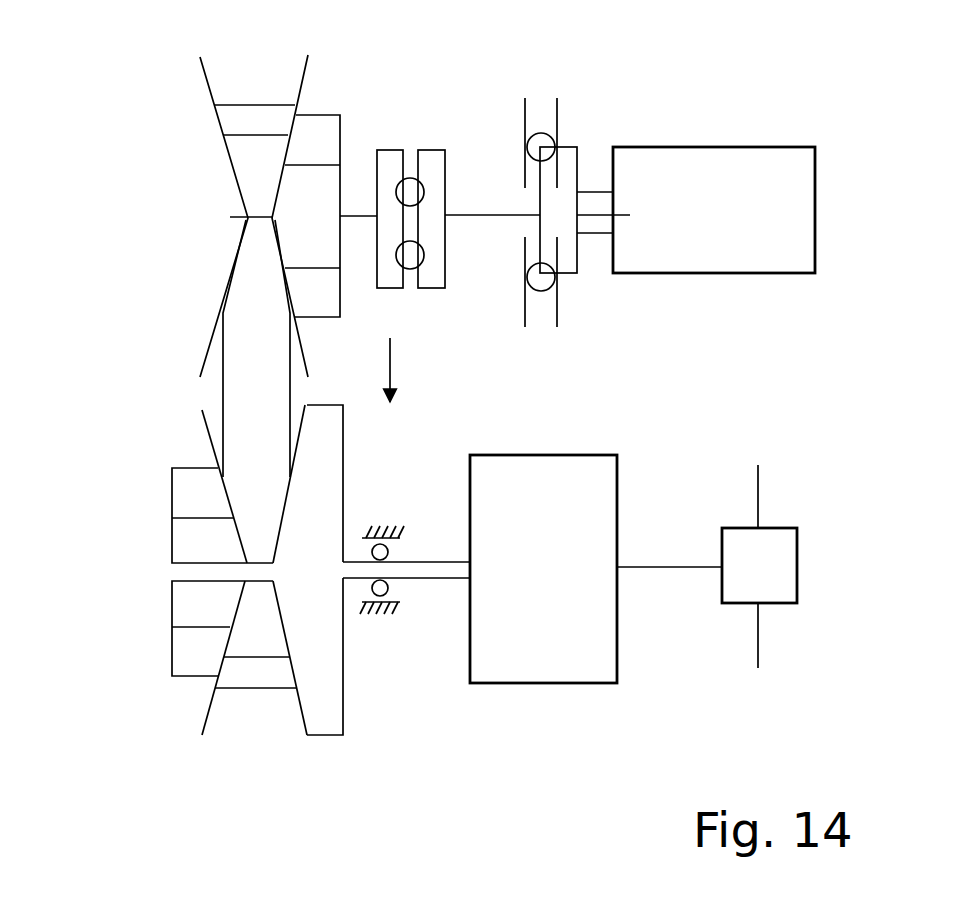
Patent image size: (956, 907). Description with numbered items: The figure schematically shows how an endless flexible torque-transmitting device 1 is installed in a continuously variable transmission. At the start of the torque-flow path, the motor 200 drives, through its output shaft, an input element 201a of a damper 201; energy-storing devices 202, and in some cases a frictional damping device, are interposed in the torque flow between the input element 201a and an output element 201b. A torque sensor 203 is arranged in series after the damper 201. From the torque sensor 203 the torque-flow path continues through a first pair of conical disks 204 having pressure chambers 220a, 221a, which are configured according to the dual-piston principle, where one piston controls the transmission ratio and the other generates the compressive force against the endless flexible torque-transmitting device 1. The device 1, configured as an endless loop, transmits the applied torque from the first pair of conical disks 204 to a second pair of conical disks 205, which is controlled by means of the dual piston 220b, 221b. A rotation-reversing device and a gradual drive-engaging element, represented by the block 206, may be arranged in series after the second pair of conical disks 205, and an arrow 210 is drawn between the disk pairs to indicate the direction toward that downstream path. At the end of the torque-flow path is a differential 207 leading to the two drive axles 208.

The endless flexible torque-transmitting device 1 is at (240, 392).
The motor 200 is at (750, 163).
The damper 201 is at (563, 197).
The input element 201a is at (558, 308).
The output element 201b is at (540, 202).
The energy-storing devices 202 is at (540, 133).
The torque sensor 203 is at (411, 133).
The first pair of conical disks 204 is at (228, 197).
The second pair of conical disks 205 is at (193, 584).
The block 206 is at (528, 710).
The differential 207 is at (759, 565).
The drive axles 208 is at (760, 493).
The direction arrow 210 is at (392, 363).
The pressure chamber 220a is at (318, 125).
The dual piston 220b is at (185, 608).
The pressure chamber 221a is at (293, 193).
The dual piston 221b is at (185, 657).